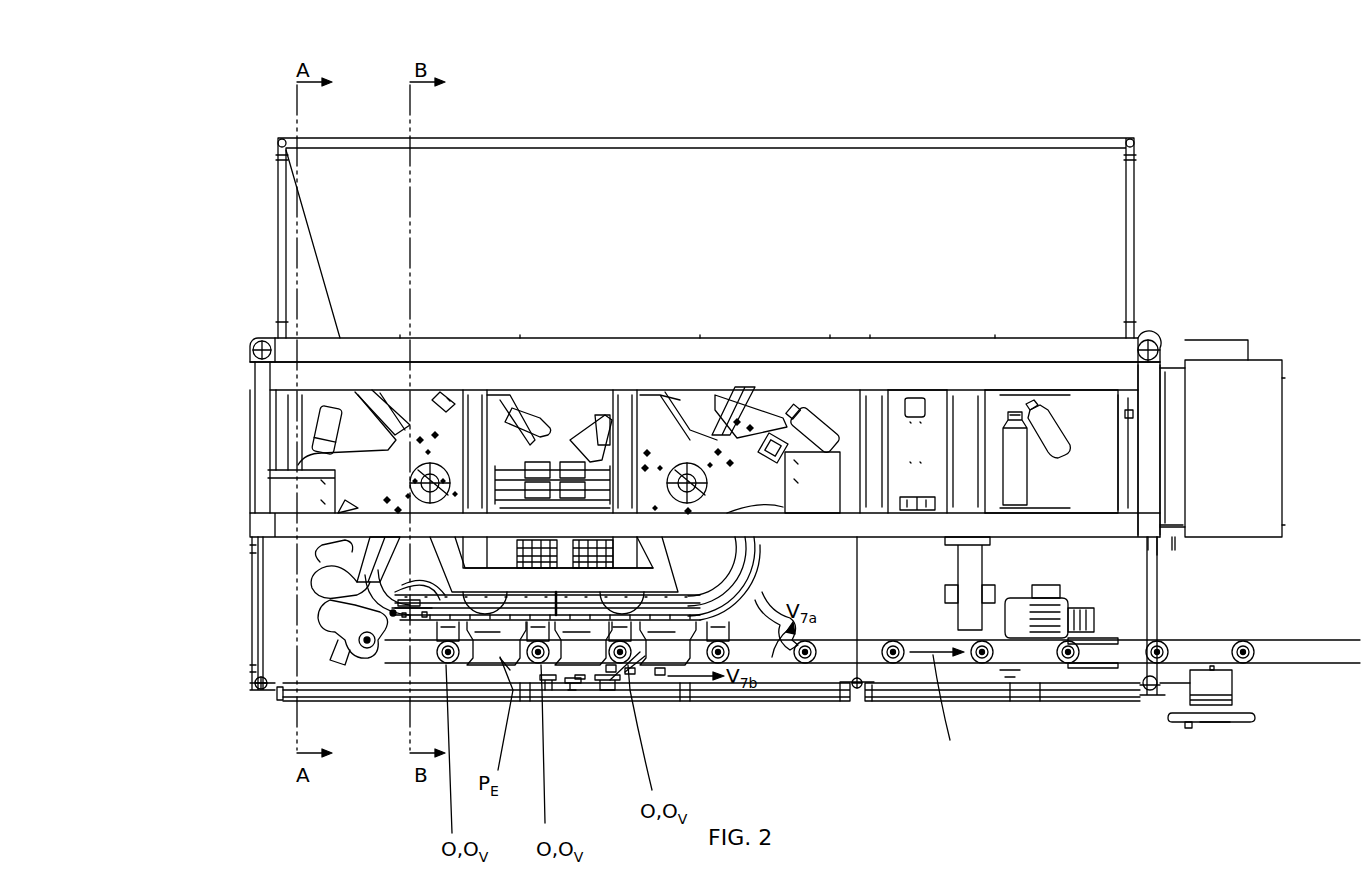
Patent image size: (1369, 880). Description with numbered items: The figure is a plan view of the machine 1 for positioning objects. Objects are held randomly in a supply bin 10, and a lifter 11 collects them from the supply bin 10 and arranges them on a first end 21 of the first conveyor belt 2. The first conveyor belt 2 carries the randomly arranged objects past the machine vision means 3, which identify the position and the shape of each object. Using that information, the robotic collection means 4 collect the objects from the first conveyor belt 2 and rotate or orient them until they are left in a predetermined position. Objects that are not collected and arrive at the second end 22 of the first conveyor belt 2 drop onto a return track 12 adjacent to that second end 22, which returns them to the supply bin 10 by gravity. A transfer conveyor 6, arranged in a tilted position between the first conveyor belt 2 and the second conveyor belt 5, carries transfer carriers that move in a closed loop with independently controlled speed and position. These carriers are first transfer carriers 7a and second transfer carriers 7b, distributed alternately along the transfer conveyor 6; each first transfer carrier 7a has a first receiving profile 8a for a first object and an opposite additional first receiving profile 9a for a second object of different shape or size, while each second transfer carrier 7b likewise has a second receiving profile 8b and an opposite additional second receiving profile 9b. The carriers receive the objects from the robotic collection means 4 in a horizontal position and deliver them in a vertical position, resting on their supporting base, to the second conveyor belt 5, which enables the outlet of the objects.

The machine 1 is at (212, 97).
The first conveyor belt 2 is at (1073, 417).
The machine vision means 3 is at (960, 397).
The robotic collection means 4 is at (444, 470).
The second conveyor belt 5 is at (1278, 663).
The transfer conveyor 6 is at (387, 632).
The first transfer carrier 7a is at (437, 670).
The second transfer carrier 7b is at (458, 662).
The first receiving profile 8a is at (632, 668).
The second receiving profile 8b is at (610, 668).
The additional first receiving profile 9a is at (660, 668).
The additional second receiving profile 9b is at (571, 690).
The supply bin 10 is at (312, 230).
The lifter 11 is at (1283, 447).
The return track 12 is at (300, 423).
The first end 21 is at (1120, 410).
The second end 22 is at (350, 397).